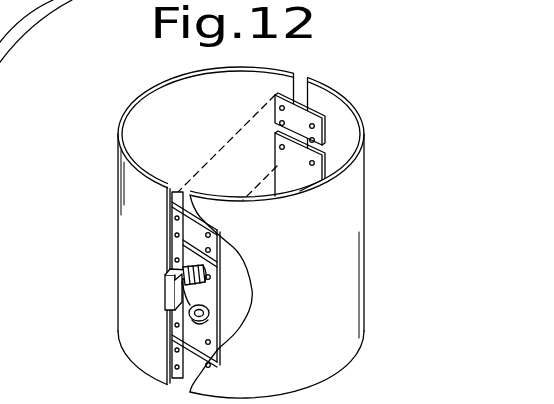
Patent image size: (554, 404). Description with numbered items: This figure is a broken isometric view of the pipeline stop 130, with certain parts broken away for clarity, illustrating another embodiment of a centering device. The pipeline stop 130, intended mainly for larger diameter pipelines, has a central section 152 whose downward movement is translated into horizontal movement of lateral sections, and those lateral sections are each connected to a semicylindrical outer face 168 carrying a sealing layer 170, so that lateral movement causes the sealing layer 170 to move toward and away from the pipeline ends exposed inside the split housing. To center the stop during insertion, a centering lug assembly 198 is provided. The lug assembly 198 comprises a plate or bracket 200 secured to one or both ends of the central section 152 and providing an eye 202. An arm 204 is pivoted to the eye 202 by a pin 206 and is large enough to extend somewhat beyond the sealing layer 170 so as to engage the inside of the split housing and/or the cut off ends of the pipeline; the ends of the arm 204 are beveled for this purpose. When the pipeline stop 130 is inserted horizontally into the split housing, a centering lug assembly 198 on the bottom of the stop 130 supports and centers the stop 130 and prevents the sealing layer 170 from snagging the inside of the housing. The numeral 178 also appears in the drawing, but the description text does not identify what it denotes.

The pipeline stop 130 is at (111, 201).
The central section 152 is at (235, 133).
The semicylindrical outer face 168 is at (325, 103).
The sealing layer 170 is at (313, 249).
The base 178 is at (23, 395).
The centering lug assembly 198 is at (185, 257).
The plate or bracket 200 is at (216, 342).
The eye 202 is at (205, 297).
The arm 204 is at (165, 277).
The pin 206 is at (209, 316).